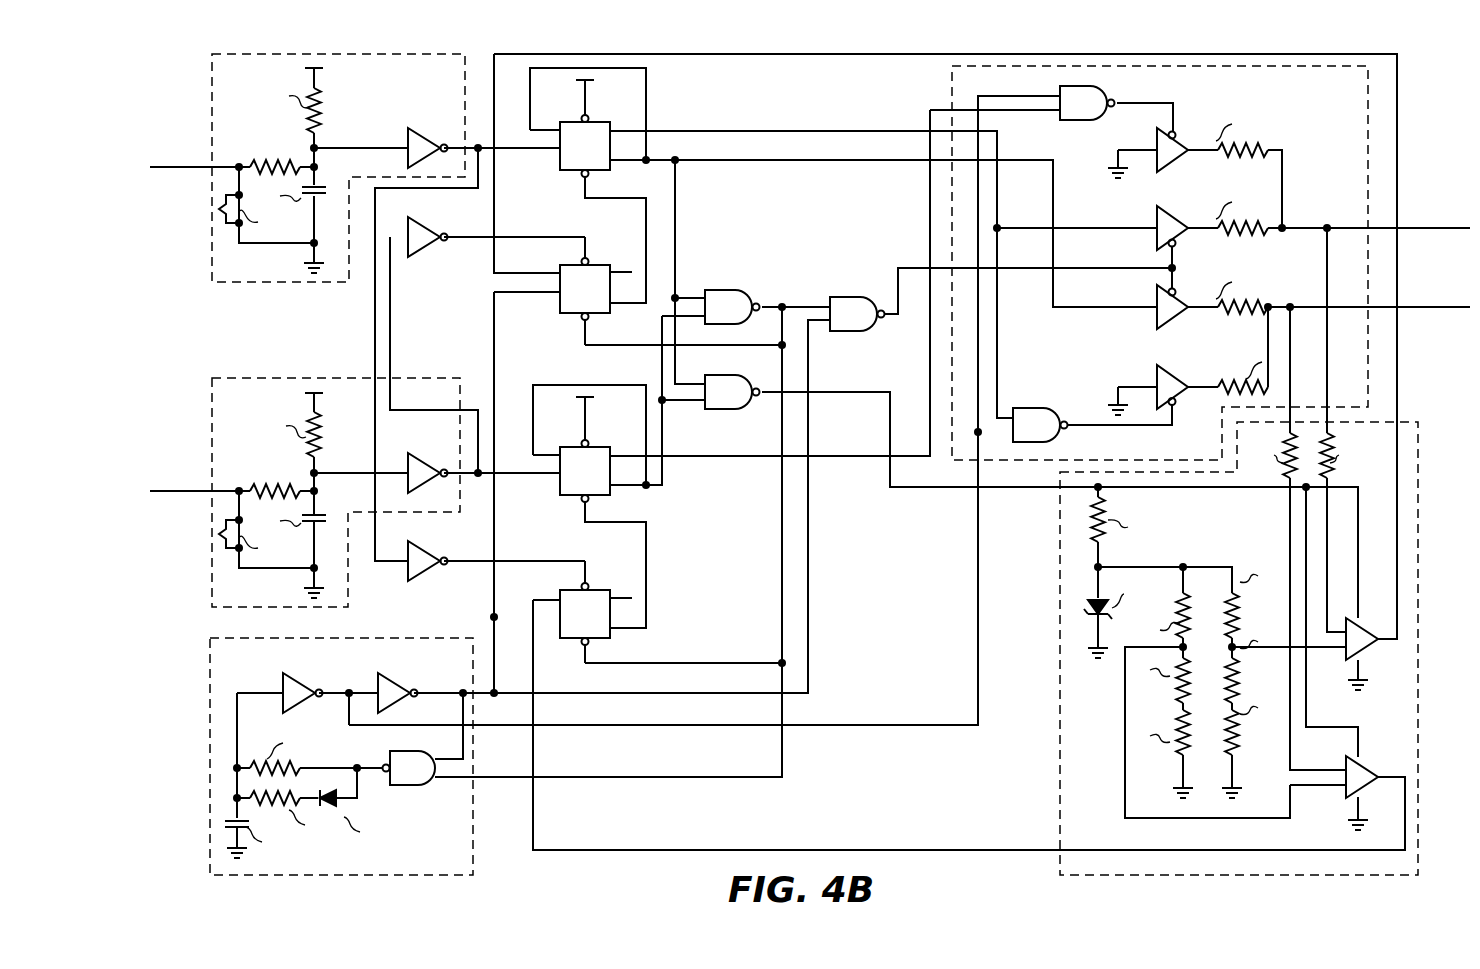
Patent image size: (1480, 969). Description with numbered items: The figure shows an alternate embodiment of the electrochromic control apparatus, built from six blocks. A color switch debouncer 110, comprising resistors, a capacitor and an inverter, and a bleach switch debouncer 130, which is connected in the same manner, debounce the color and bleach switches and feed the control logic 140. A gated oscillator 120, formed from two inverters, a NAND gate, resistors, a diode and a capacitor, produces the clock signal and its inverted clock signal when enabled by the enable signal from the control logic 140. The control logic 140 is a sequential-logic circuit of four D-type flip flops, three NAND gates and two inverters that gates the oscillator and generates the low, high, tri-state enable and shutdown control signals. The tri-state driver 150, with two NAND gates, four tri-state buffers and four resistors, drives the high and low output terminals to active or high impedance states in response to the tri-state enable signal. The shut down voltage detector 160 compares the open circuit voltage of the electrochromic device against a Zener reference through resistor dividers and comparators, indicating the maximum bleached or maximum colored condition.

The color switch debouncer 110 is at (298, 283).
The gated oscillator 120 is at (473, 843).
The bleach switch debouncer 130 is at (258, 378).
The control logic 140 is at (862, 758).
The tri-state driver 150 is at (951, 100).
The shut down voltage detector 160 is at (1058, 805).